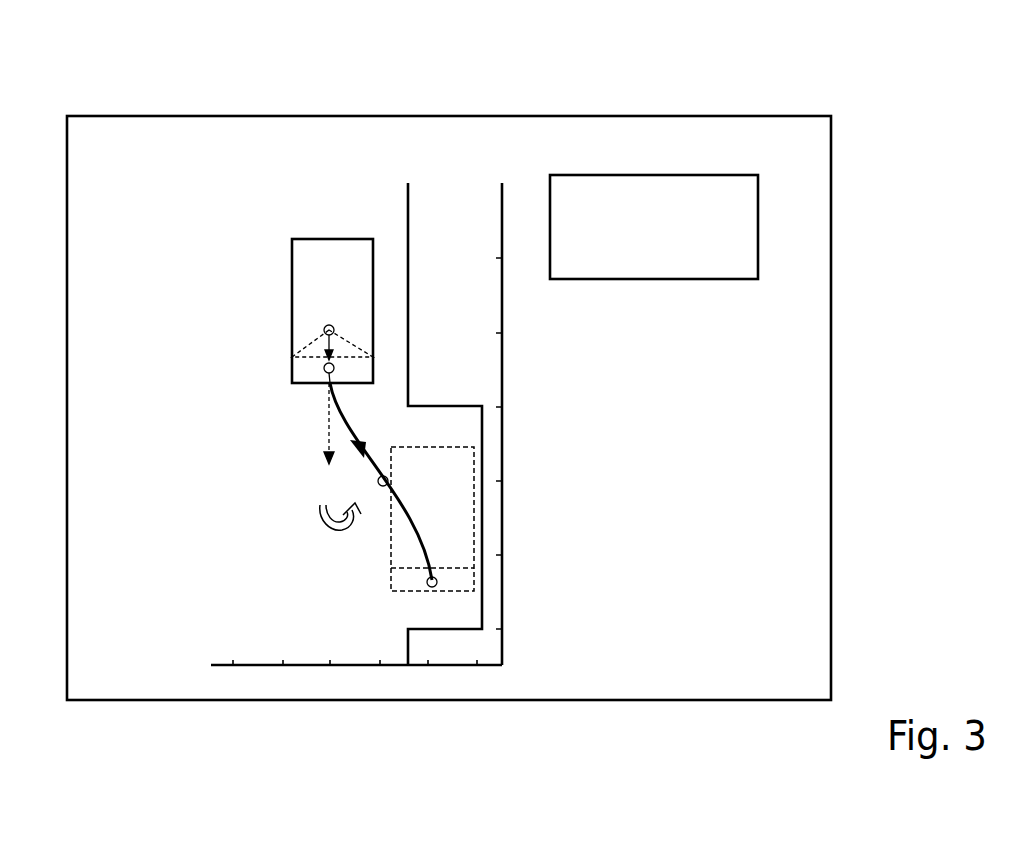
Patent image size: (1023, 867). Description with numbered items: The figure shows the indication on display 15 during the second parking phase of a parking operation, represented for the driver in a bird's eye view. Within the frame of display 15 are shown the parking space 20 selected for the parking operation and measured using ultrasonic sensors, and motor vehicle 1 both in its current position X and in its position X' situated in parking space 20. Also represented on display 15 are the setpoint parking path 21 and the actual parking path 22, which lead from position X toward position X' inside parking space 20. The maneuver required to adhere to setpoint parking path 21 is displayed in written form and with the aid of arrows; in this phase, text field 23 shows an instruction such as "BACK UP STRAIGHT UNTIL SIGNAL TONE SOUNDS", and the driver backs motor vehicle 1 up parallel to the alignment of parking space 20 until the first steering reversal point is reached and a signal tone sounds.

The display 15 is at (562, 115).
The text field 23 is at (758, 210).
The parking space 20 is at (452, 406).
The motor vehicle 1 is at (292, 277).
The current position X is at (356, 201).
The actual parking path 22 is at (348, 430).
The position situated in parking space X' is at (488, 519).
The setpoint parking path 21 is at (417, 518).